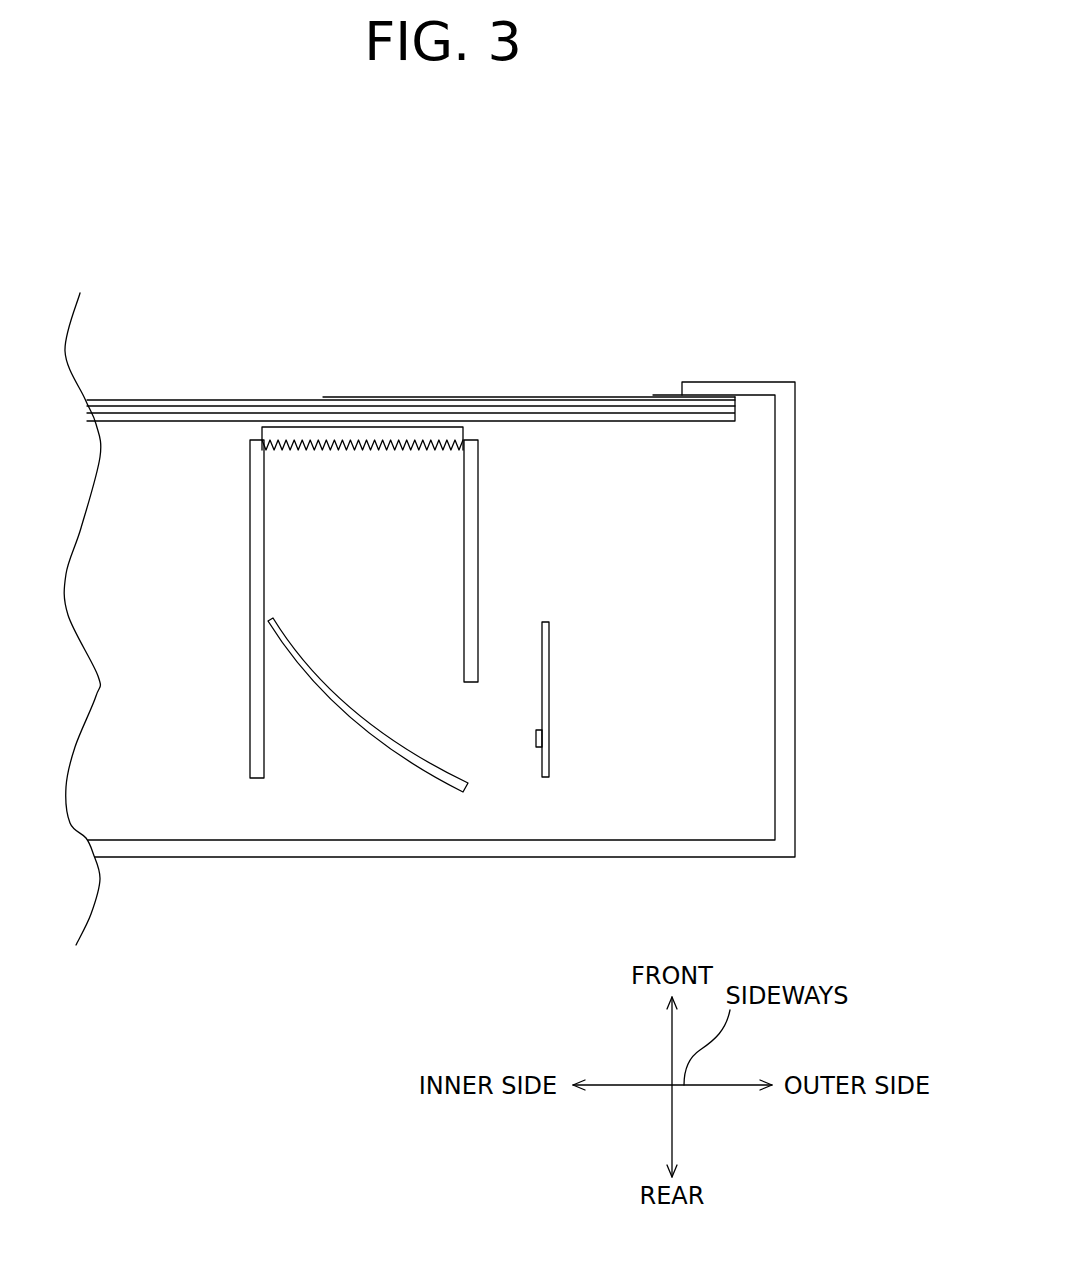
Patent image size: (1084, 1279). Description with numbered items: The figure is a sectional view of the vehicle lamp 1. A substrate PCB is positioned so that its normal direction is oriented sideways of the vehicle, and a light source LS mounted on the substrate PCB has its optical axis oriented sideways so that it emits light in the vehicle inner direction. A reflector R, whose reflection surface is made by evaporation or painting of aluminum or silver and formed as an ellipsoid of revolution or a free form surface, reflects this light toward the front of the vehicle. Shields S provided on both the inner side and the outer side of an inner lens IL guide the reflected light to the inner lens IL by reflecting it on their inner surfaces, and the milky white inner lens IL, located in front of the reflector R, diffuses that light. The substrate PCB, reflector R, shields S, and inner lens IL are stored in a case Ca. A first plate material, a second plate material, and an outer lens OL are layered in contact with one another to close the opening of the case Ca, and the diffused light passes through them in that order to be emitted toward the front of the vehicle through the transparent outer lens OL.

The vehicle lamp 1 is at (710, 229).
The case Ca is at (746, 382).
The outer lens OL is at (628, 398).
The inner lens IL is at (398, 444).
The shields S is at (478, 540).
The reflector R is at (402, 745).
The substrate PCB is at (549, 698).
The light source LS is at (536, 745).